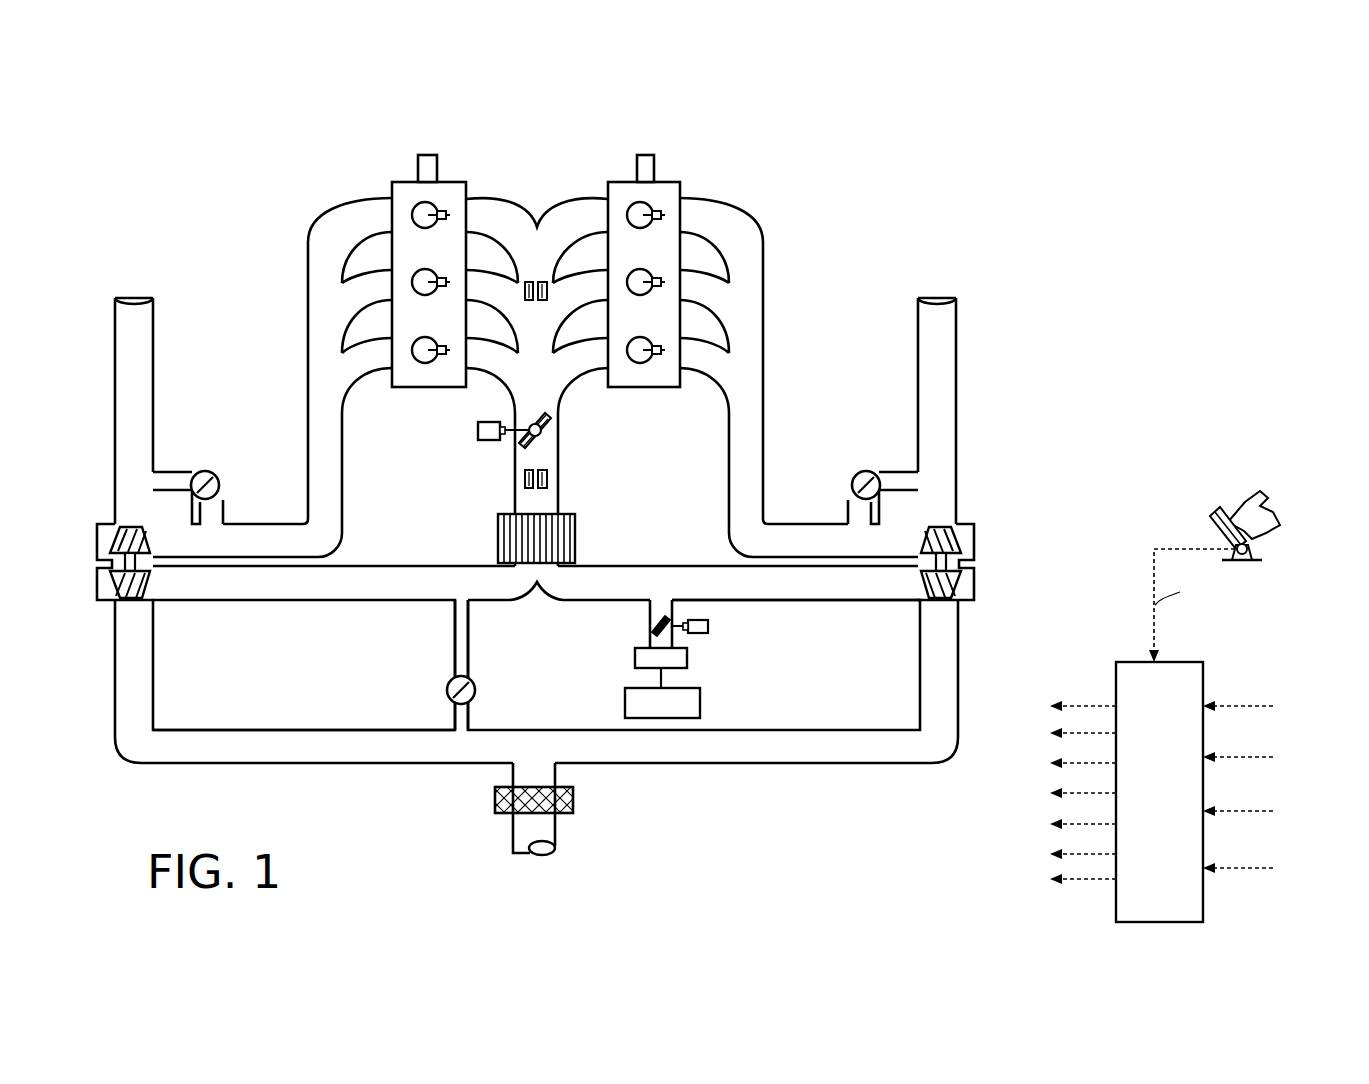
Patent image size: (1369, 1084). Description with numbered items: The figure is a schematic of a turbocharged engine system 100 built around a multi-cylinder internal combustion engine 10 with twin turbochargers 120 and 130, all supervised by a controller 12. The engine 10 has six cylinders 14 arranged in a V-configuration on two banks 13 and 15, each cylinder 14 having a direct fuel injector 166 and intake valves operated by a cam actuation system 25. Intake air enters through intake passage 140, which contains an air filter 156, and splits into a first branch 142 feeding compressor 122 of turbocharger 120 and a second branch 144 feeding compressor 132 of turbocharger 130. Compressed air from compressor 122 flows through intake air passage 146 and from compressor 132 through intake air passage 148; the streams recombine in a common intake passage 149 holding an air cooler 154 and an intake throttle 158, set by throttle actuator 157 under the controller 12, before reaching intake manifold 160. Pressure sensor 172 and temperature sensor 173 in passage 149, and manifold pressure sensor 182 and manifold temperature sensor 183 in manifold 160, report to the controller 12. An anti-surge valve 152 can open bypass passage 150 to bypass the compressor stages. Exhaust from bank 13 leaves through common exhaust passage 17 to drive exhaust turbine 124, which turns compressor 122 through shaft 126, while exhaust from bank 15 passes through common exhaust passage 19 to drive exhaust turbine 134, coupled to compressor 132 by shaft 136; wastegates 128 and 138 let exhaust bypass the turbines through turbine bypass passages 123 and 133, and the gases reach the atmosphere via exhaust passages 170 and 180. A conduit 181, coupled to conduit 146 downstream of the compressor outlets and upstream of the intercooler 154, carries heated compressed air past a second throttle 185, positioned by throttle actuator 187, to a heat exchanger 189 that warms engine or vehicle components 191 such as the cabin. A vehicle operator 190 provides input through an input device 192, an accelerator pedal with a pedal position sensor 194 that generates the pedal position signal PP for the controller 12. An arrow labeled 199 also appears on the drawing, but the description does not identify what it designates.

The internal combustion engine 10 is at (912, 183).
The turbocharged engine system 100 is at (1185, 171).
The controller 12 is at (1170, 800).
The first bank 13 is at (670, 183).
The cylinder 14 is at (643, 270).
The second bank 15 is at (403, 183).
The common exhaust passage 17 is at (764, 452).
The common exhaust passage 19 is at (307, 444).
The intake valve cam actuation system 25 is at (430, 158).
The turbocharger 120 is at (984, 556).
The compressor 122 is at (943, 598).
The turbine bypass passage 123 is at (905, 472).
The exhaust turbine 124 is at (952, 535).
The shaft 126 is at (952, 567).
The wastegate 128 is at (858, 478).
The turbocharger 130 is at (96, 551).
The compressor 132 is at (118, 600).
The turbine bypass passage 133 is at (174, 472).
The exhaust turbine 134 is at (117, 540).
The shaft 136 is at (125, 568).
The wastegate 138 is at (213, 478).
The intake passage 140 is at (556, 848).
The intake passage 142 is at (728, 728).
The intake passage 144 is at (293, 728).
The intake air passage 146 is at (718, 602).
The intake air passage 148 is at (262, 603).
The common intake passage 149 is at (559, 448).
The bypass passage 150 is at (470, 650).
The anti-surge valve 152 is at (473, 690).
The air cooler 154 is at (577, 538).
The air filter 156 is at (575, 798).
The throttle actuator 157 is at (478, 425).
The throttle 158 is at (531, 420).
The intake manifold 160 is at (533, 198).
The fuel injector 166 is at (659, 280).
The exhaust passage 170 is at (917, 355).
The pressure sensor 172 is at (525, 486).
The temperature sensor 173 is at (545, 486).
The exhaust passage 180 is at (155, 355).
The conduit 181 is at (652, 622).
The intake manifold pressure sensor 182 is at (527, 301).
The intake manifold temperature sensor 183 is at (545, 301).
The second throttle 185 is at (656, 612).
The throttle actuator 187 is at (698, 635).
The heat exchanger 189 is at (635, 660).
The engine or vehicle components 191 is at (662, 703).
The vehicle operator 190 is at (1260, 522).
The input device 192 is at (1212, 524).
The pedal position sensor 194 is at (1250, 549).
The engine region 199 is at (705, 473).